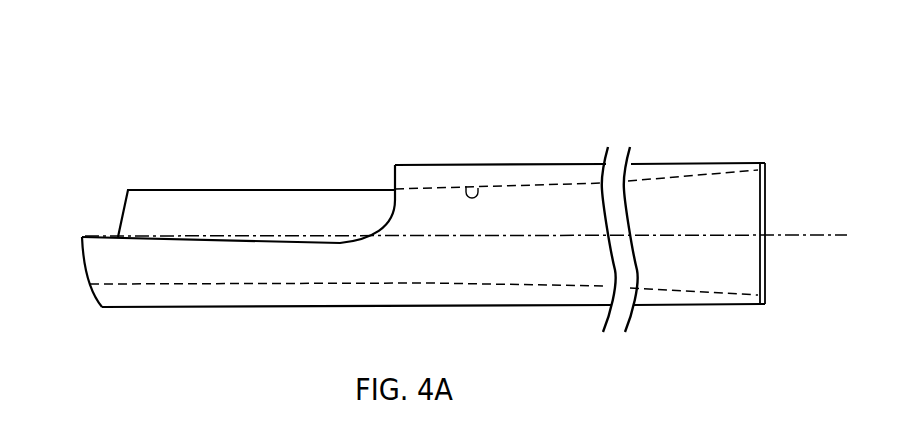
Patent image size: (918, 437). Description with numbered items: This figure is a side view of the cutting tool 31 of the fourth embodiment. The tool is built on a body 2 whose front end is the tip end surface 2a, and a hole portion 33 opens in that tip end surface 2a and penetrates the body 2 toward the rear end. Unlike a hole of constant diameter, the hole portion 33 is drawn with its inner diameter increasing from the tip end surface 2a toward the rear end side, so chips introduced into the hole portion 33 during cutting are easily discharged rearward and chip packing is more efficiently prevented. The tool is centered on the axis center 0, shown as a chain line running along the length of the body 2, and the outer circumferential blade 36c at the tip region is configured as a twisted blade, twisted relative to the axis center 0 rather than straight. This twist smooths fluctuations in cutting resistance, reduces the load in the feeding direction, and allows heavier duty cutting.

The cutting tool 31 is at (283, 118).
The body 2 is at (542, 147).
The tip end surface 2a is at (120, 215).
The hole portion 33 is at (478, 186).
The outer circumferential blade 36c is at (92, 236).
The axis center 0 is at (803, 232).